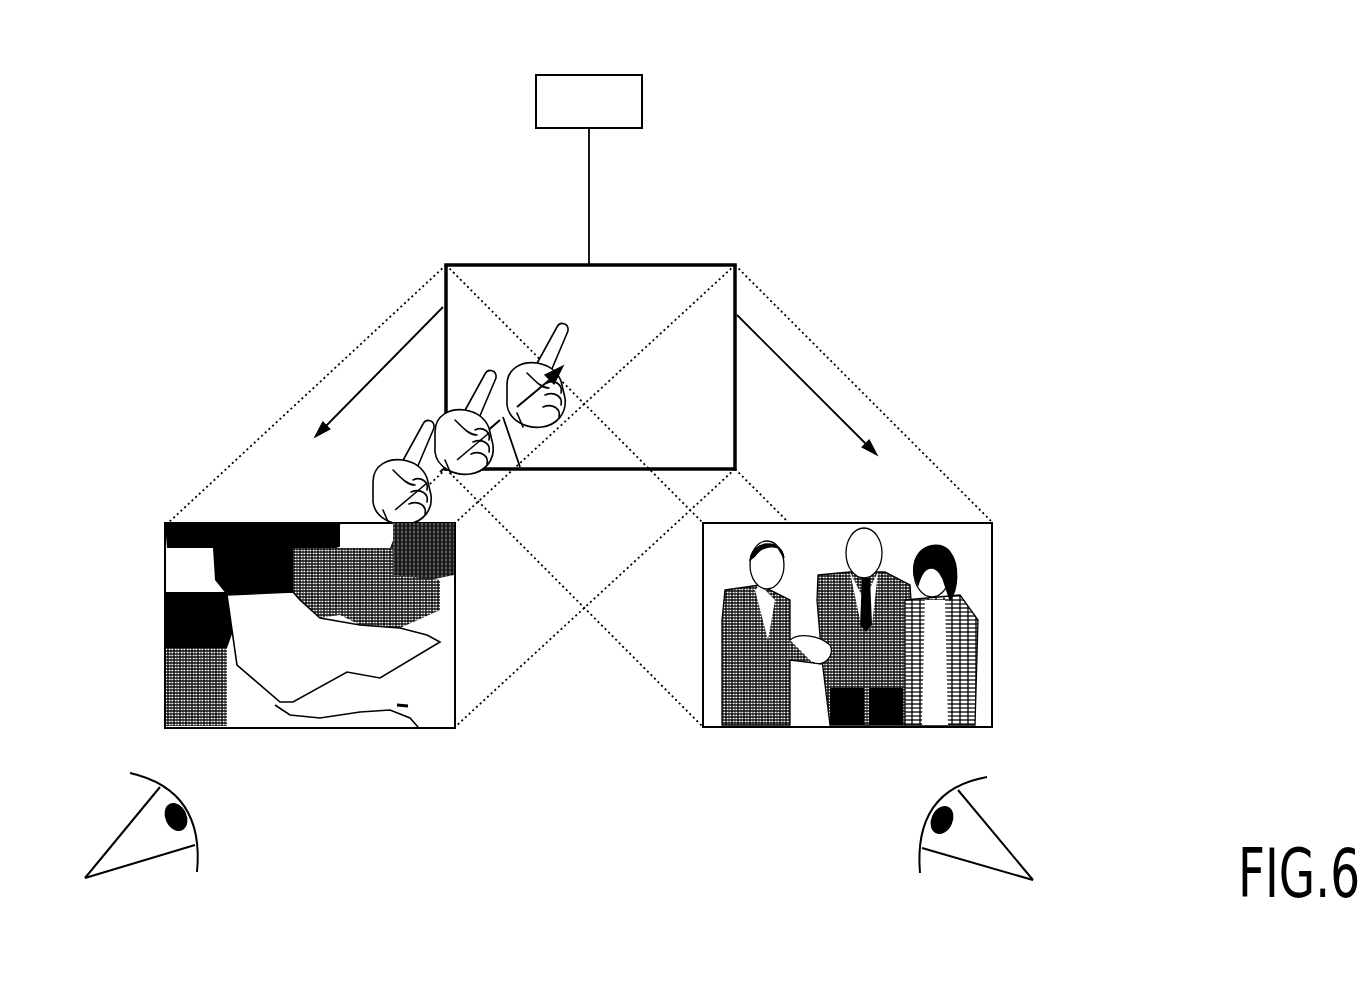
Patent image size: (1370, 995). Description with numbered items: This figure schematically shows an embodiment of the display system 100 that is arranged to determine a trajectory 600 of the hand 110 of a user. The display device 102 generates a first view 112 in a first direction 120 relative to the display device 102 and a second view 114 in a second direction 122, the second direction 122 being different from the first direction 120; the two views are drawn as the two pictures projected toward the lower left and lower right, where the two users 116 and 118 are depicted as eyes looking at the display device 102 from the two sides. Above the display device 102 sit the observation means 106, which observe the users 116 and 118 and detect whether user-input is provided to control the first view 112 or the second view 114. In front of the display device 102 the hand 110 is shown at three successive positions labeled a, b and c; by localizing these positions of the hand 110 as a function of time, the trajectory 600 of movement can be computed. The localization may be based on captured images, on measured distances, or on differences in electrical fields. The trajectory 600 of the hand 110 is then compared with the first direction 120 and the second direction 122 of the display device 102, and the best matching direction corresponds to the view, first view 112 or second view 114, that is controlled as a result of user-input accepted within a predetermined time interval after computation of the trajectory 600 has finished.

The display system 100 is at (422, 209).
The display device 102 is at (700, 263).
The observation means 106 is at (598, 80).
The hand 110 is at (523, 382).
The first view 112 is at (405, 722).
The second view 114 is at (802, 723).
The user 116 is at (195, 846).
The user 118 is at (922, 845).
The first direction 120 is at (388, 358).
The second direction 122 is at (823, 397).
The trajectory 600 is at (520, 467).